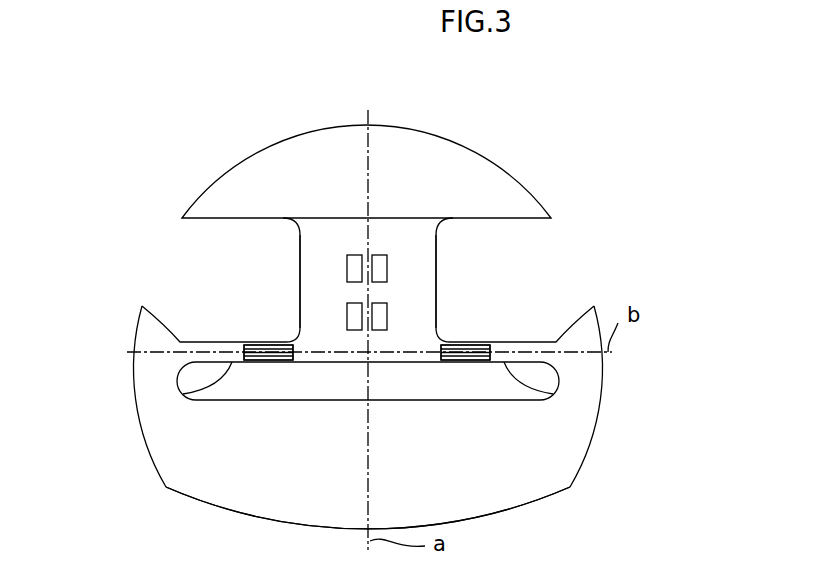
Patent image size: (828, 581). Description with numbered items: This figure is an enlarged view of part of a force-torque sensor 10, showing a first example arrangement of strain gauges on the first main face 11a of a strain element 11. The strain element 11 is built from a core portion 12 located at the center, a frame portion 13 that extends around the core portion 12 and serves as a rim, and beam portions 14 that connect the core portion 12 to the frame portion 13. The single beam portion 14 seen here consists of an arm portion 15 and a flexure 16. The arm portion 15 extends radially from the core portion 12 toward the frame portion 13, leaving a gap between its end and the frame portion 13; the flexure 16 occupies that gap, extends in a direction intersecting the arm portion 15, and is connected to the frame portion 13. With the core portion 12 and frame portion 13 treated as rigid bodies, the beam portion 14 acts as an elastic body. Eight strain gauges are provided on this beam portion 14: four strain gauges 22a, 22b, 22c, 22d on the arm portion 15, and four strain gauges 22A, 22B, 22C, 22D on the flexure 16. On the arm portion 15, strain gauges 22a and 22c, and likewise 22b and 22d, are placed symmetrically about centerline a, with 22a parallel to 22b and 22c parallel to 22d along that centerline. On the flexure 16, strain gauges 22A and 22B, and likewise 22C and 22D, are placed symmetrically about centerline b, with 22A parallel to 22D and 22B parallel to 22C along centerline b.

The force-torque sensor 10 is at (122, 137).
The strain element 11 is at (520, 178).
The first main face 11a is at (268, 484).
The core portion 12 is at (228, 183).
The frame portion 13 is at (538, 478).
The beam portion 14 is at (484, 276).
The arm portion 15 is at (312, 288).
The flexure 16 is at (187, 389).
The strain gauge 22a is at (355, 270).
The strain gauge 22b is at (355, 323).
The strain gauge 22c is at (380, 270).
The strain gauge 22d is at (380, 323).
The strain gauge 22A is at (259, 345).
The strain gauge 22B is at (259, 363).
The strain gauge 22C is at (469, 363).
The strain gauge 22D is at (470, 345).